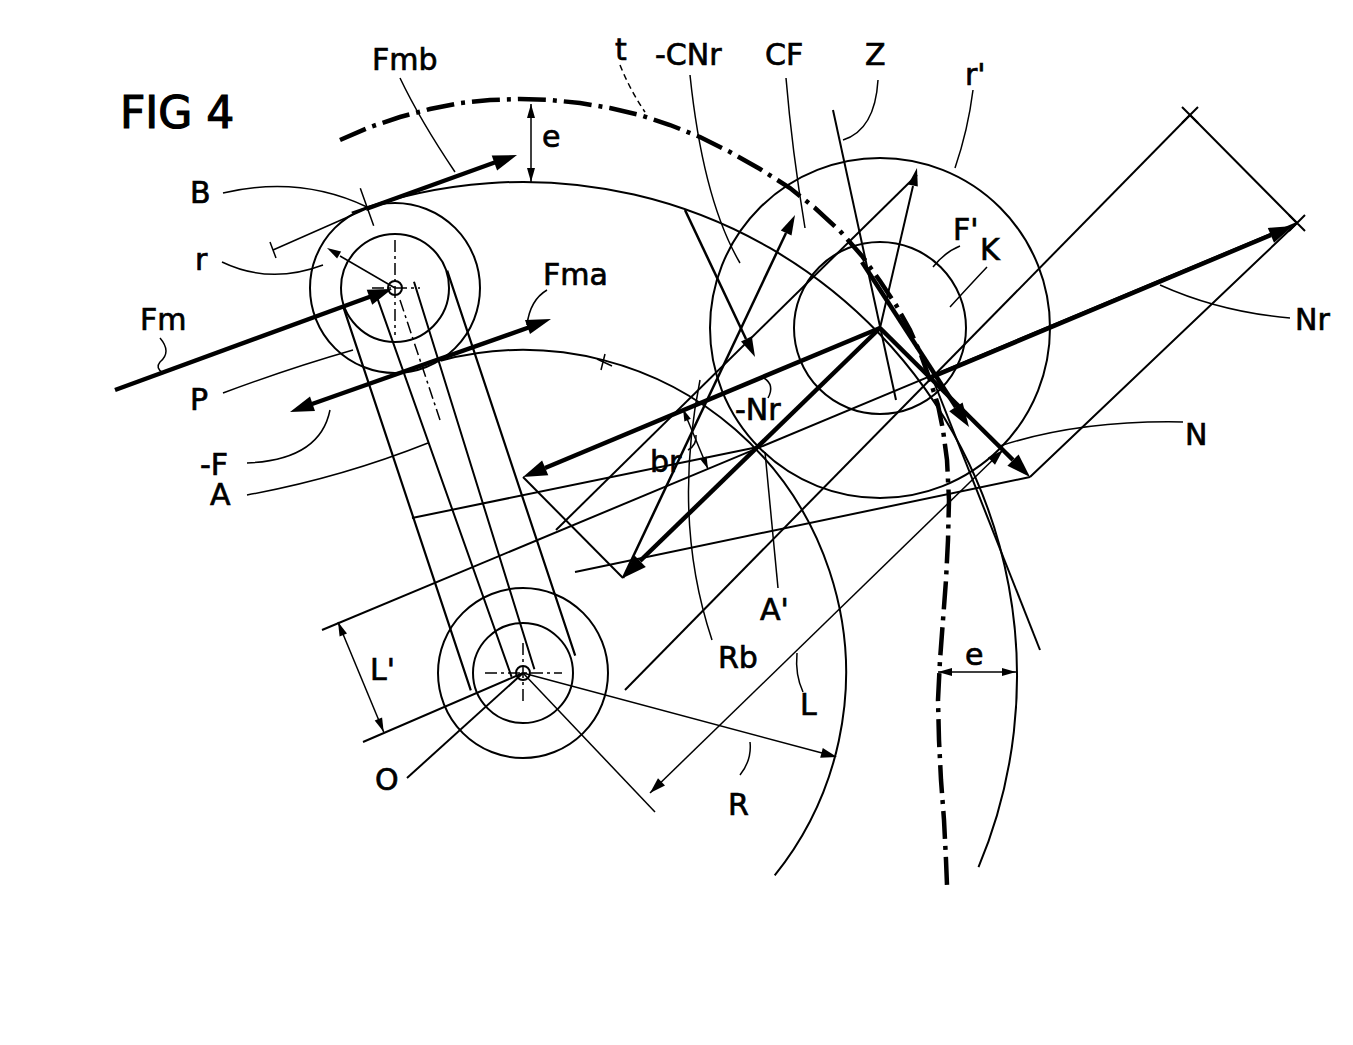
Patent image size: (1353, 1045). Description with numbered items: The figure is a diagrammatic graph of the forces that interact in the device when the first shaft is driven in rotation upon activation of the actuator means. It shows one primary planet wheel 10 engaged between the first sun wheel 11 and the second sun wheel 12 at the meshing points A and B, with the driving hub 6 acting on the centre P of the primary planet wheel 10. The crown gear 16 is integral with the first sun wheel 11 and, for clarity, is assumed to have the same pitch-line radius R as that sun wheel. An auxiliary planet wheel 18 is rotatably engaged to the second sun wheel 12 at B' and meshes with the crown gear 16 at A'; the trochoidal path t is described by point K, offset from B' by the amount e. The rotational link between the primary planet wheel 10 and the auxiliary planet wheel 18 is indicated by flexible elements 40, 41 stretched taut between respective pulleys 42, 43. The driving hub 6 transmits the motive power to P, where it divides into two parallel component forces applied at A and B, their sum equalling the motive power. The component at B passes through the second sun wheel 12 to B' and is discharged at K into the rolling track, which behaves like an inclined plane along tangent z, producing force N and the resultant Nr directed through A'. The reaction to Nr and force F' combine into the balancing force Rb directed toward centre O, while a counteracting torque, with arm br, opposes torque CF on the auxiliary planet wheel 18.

The driving hub 6 is at (414, 518).
The primary planet wheel 10 is at (460, 270).
The first sun wheel 11 is at (568, 358).
The second sun wheel 12 is at (585, 183).
The crown gear 16 is at (633, 358).
The auxiliary planet wheel 18 is at (1010, 203).
The flexible element 40 is at (500, 553).
The flexible element 41 is at (661, 653).
The pulley 42 is at (420, 253).
The pulley 43 is at (547, 752).